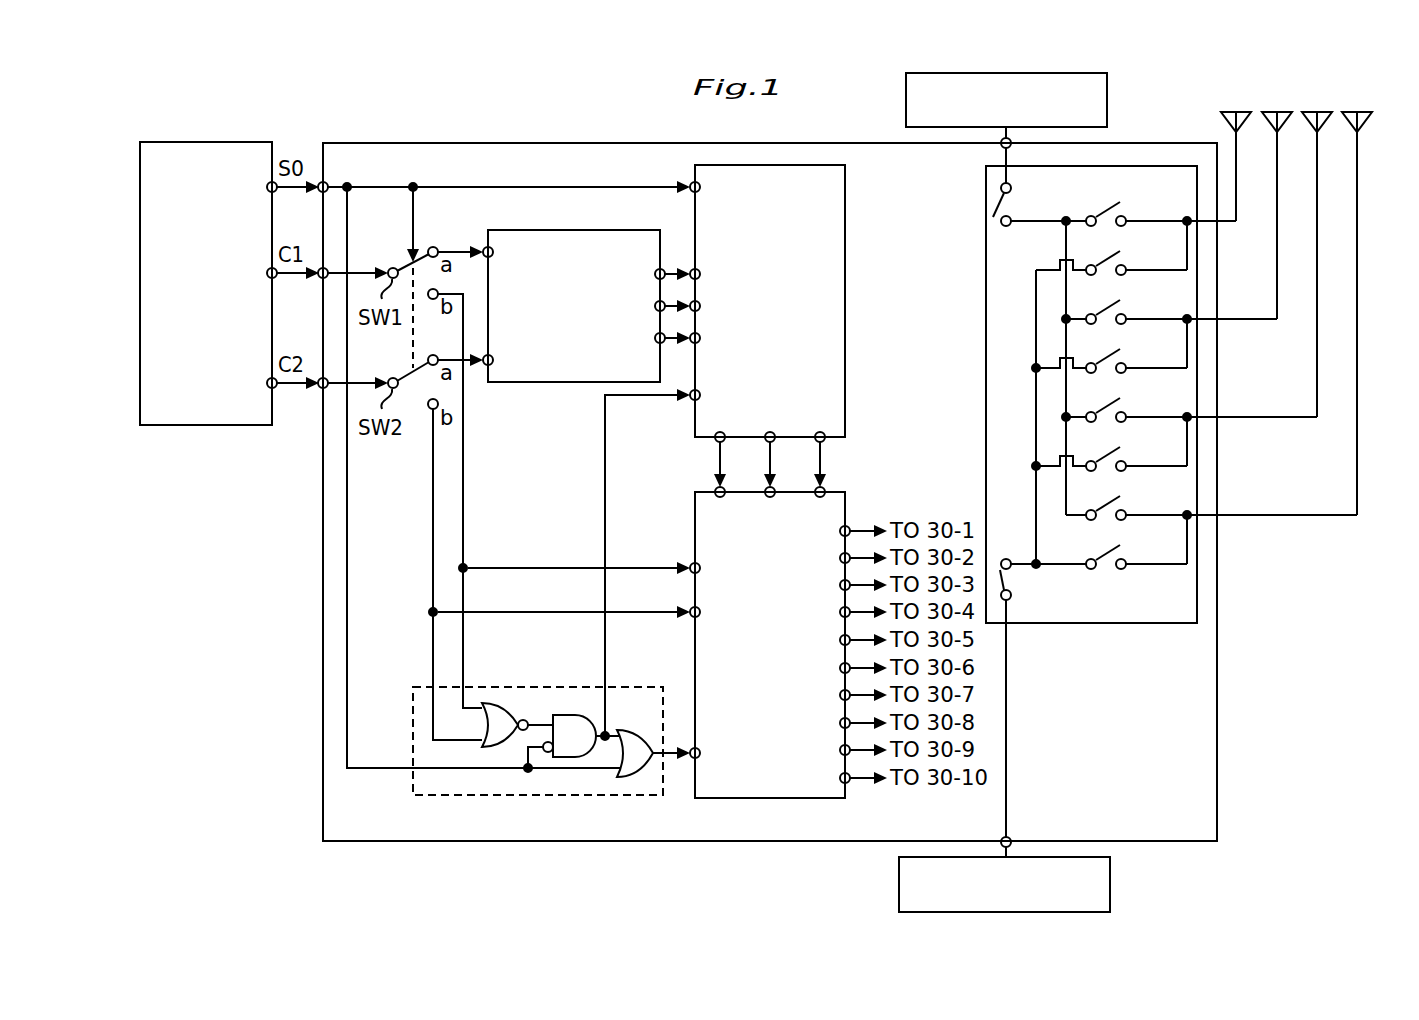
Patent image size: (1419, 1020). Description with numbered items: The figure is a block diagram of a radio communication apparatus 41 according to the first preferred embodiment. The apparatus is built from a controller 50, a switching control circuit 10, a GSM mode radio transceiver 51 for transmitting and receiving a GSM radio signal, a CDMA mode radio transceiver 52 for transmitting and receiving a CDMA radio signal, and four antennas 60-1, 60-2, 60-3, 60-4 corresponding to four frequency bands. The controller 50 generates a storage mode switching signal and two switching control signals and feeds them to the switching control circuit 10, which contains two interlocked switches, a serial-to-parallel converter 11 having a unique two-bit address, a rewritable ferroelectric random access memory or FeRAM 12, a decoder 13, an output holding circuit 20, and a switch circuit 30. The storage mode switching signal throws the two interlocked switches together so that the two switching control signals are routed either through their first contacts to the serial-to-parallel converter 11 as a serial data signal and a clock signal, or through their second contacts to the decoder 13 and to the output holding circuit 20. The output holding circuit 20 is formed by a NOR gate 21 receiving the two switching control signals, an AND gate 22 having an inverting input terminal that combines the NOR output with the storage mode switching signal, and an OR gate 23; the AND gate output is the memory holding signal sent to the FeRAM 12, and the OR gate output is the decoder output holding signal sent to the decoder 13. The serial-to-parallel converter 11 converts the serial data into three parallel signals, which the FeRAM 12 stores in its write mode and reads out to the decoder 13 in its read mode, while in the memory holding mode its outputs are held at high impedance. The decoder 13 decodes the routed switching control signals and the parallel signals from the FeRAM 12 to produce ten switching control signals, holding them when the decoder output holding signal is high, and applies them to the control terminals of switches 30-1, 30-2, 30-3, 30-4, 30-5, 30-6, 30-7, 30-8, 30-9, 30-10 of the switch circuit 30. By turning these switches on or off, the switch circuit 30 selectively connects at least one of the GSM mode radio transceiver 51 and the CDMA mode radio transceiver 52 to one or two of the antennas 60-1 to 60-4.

The radio communication apparatus 41 is at (370, 118).
The switching control circuit 10 is at (403, 143).
The controller 50 is at (209, 142).
The serial-to-parallel converter 11 is at (575, 231).
The ferroelectric random access memory (FeRAM) 12 is at (848, 185).
The decoder 13 is at (775, 798).
The output holding circuit 20 is at (588, 736).
The NOR gate 21 is at (505, 703).
The AND gate having an inverting input terminal 22 is at (568, 715).
The OR gate 23 is at (637, 730).
The switch circuit 30 is at (1171, 492).
The switch 30-1 is at (1010, 588).
The switch 30-2 is at (1014, 212).
The switch 30-3 is at (1111, 211).
The switch 30-4 is at (1111, 260).
The switch 30-5 is at (1111, 309).
The switch 30-6 is at (1111, 358).
The switch 30-7 is at (1111, 407).
The switch 30-8 is at (1111, 456).
The switch 30-9 is at (1111, 505).
The switch 30-10 is at (1106, 553).
The GSM mode radio transceiver 51 is at (906, 95).
The CDMA mode radio transceiver 52 is at (899, 884).
The antenna 60-1 is at (1220, 113).
The antenna 60-2 is at (1262, 112).
The antenna 60-3 is at (1305, 112).
The antenna 60-4 is at (1357, 112).